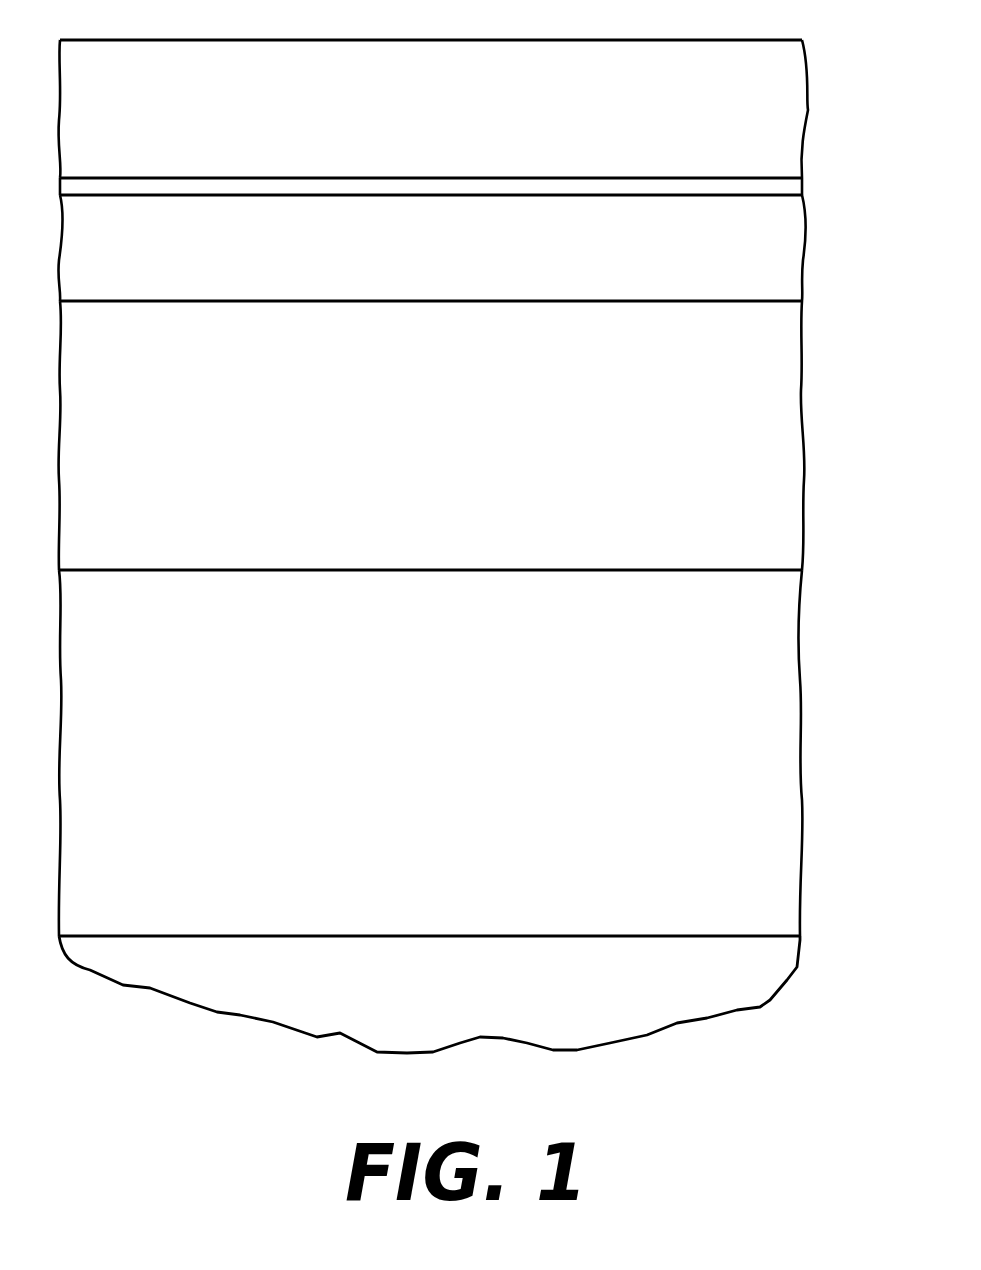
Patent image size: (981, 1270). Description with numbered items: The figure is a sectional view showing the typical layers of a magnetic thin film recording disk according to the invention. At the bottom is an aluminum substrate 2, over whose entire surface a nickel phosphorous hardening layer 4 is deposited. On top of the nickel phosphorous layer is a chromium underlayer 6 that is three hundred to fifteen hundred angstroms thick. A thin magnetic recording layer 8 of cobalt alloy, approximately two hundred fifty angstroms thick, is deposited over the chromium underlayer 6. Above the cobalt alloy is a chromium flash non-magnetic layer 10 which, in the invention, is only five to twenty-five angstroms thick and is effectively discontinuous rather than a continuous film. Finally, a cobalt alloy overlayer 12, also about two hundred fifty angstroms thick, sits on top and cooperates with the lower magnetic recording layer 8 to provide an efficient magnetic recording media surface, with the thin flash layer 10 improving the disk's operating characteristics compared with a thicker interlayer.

The aluminum substrate 2 is at (758, 968).
The nickel phosphorous hardening layer 4 is at (770, 787).
The chromium underlayer 6 is at (763, 480).
The magnetic recording layer 8 is at (781, 273).
The flash non-magnetic layer 10 is at (413, 185).
The cobalt alloy overlayer 12 is at (783, 58).